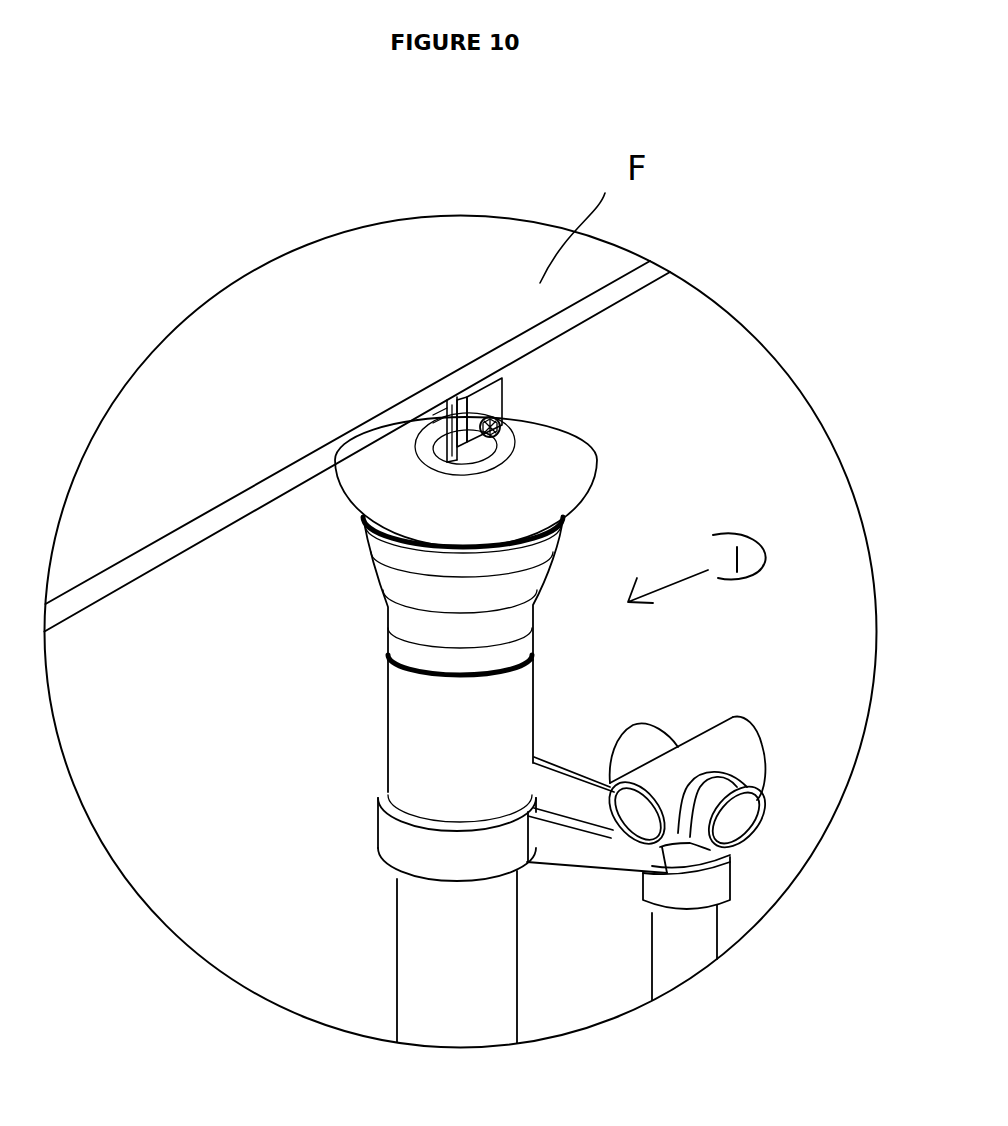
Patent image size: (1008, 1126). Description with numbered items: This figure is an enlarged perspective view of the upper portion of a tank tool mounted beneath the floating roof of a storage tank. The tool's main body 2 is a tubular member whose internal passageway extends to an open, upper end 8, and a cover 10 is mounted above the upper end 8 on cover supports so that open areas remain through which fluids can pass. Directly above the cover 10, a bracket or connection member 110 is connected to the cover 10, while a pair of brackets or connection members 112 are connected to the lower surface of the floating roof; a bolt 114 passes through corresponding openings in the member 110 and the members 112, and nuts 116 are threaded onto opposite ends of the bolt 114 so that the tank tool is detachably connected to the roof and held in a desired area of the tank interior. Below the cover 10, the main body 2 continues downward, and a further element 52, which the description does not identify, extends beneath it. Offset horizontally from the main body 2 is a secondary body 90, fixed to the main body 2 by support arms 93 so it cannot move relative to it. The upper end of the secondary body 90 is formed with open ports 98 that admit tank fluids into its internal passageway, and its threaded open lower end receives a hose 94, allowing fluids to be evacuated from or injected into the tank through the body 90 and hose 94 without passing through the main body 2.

The main body 2 is at (387, 742).
The open, upper end 8 is at (457, 452).
The cover 10 is at (587, 477).
The lower pipe section 52 is at (437, 953).
The secondary body 90 is at (741, 683).
The support arms 93 is at (575, 763).
The hose 94 is at (697, 943).
The open ports 98 is at (627, 727).
The bracket or connection member 110 is at (440, 547).
The brackets or connection members 112 is at (442, 420).
The bolt 114 is at (505, 424).
The nuts 116 is at (502, 418).